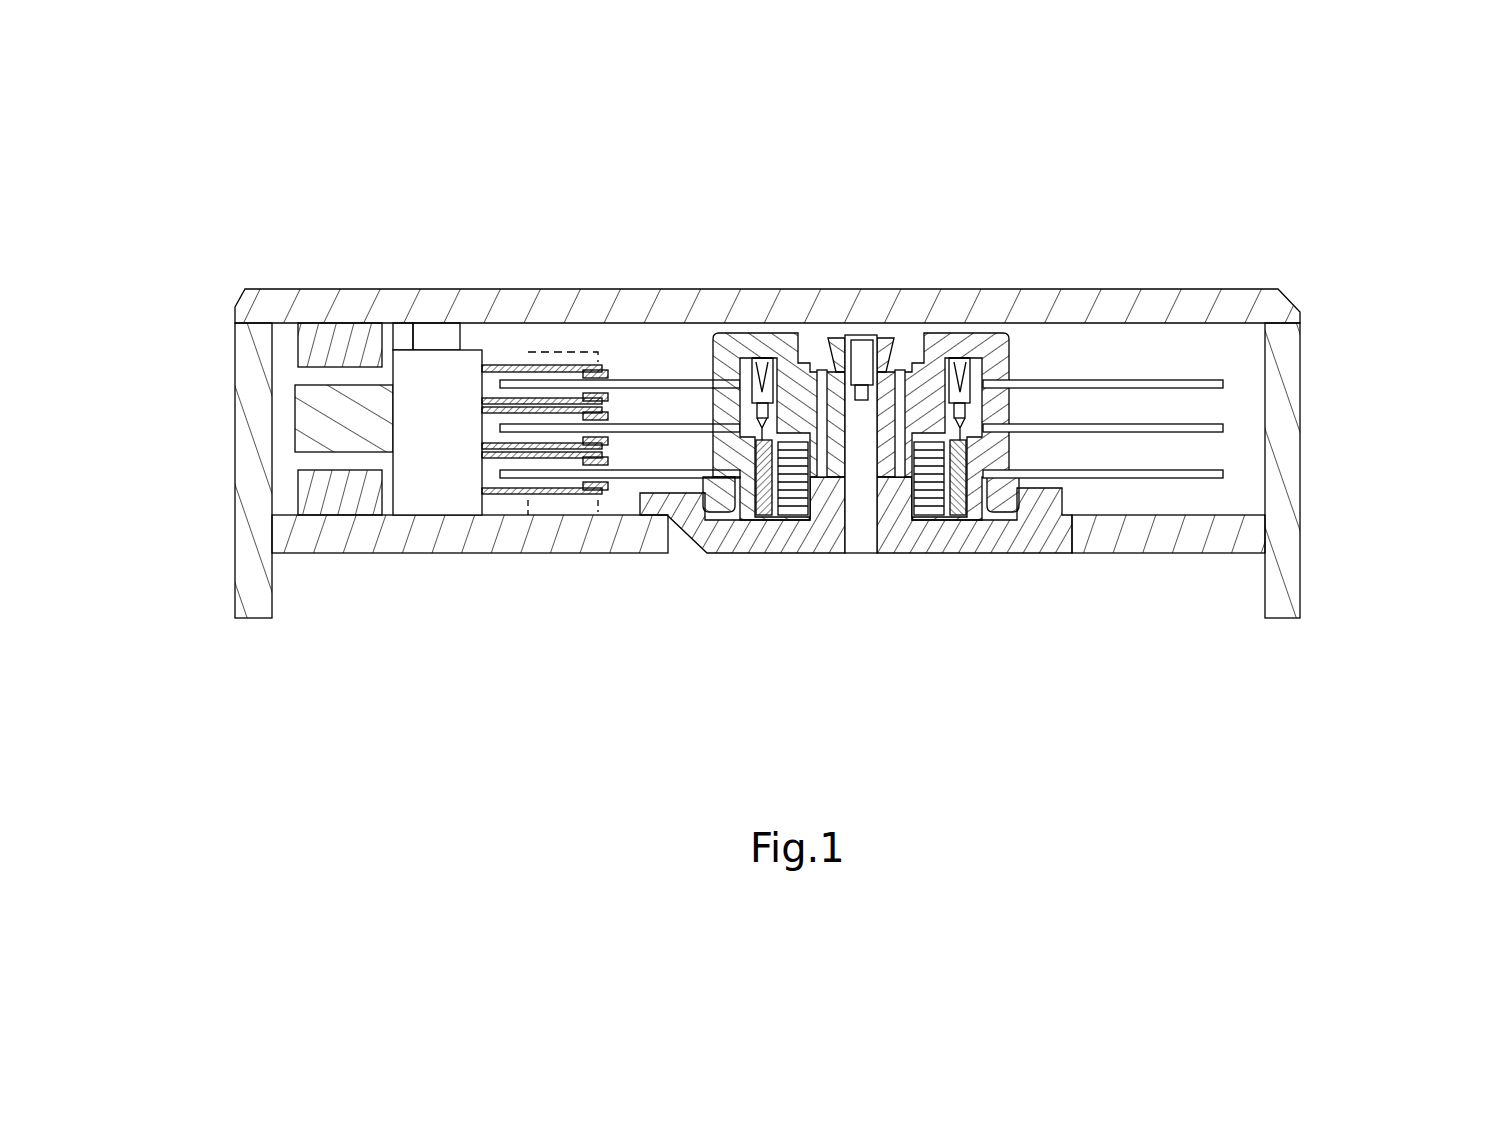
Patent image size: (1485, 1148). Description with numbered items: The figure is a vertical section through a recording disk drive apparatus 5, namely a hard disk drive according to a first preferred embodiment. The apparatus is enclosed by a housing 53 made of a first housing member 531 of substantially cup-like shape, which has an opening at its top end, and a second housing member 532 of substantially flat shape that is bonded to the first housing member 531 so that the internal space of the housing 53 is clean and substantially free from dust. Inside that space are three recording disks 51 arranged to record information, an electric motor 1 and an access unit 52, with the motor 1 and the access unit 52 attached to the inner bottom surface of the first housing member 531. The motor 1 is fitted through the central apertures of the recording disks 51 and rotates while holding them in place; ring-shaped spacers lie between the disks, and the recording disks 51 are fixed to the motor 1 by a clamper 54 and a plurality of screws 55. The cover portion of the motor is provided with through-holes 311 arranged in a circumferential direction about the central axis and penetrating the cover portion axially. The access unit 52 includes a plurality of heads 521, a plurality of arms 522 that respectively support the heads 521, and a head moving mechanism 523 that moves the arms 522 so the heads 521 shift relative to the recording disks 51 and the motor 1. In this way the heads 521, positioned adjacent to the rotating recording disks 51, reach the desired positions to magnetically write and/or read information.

The recording disk drive apparatus 5 is at (192, 297).
The housing 53 is at (1380, 262).
The second housing member 532 is at (1223, 305).
The first housing member 531 is at (1277, 417).
The access unit 52 is at (565, 678).
The head moving mechanism 523 is at (442, 477).
The arms 522 is at (508, 352).
The heads 521 is at (593, 360).
The electric motor 1 is at (893, 582).
The clamper 54 is at (727, 335).
The screws 55 is at (765, 355).
The through-holes 311 is at (758, 358).
The recording disks 51 is at (1042, 380).